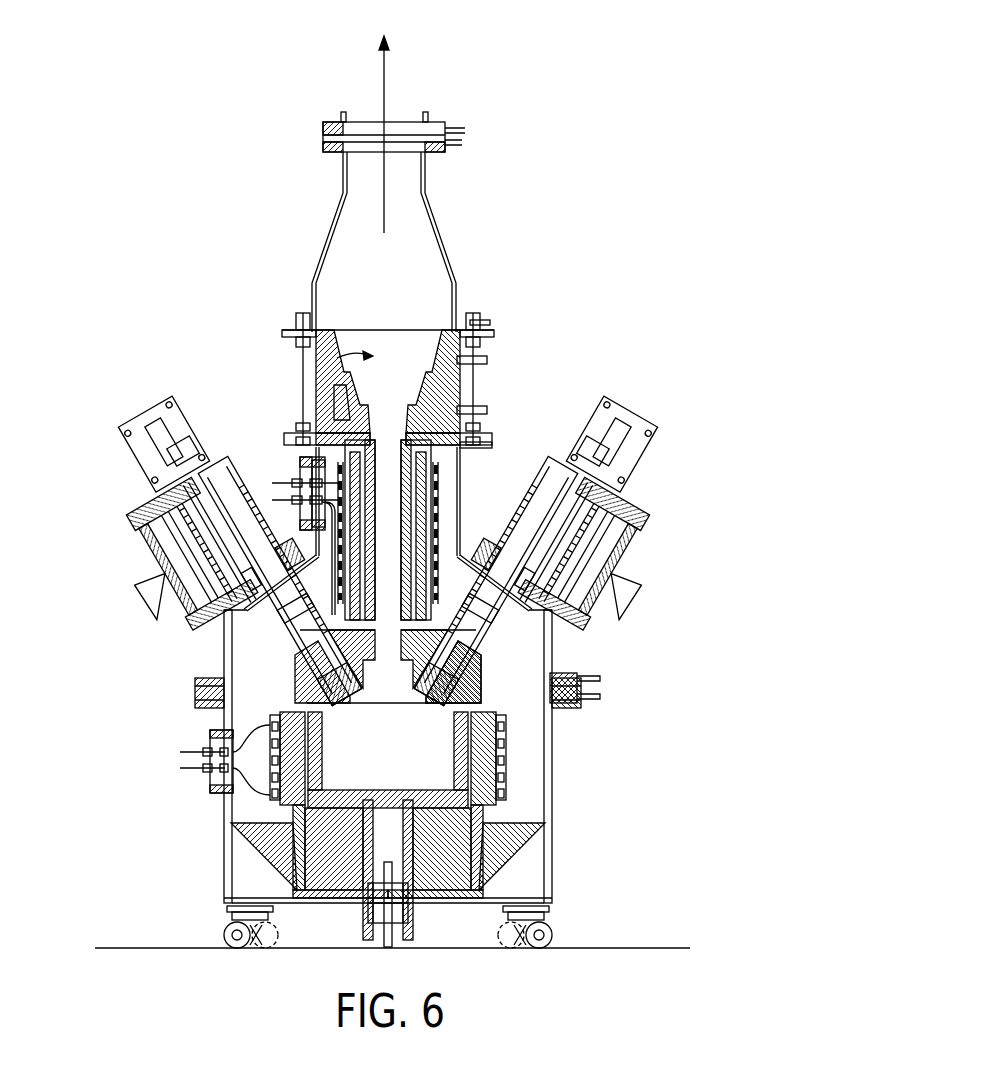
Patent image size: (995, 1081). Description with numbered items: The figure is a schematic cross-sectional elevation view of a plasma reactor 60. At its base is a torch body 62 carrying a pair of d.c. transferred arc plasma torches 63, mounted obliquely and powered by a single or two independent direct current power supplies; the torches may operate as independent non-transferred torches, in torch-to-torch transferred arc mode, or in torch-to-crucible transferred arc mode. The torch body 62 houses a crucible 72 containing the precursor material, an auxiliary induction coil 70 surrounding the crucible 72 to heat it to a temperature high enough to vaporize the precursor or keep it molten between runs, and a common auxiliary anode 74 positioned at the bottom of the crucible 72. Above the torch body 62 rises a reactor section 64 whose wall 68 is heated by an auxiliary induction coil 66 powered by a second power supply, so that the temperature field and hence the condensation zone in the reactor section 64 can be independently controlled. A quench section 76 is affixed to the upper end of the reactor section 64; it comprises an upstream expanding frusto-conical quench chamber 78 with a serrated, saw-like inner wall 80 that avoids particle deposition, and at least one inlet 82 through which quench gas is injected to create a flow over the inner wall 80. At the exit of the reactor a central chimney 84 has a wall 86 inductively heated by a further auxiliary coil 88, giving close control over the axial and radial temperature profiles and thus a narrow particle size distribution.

The plasma reactor 60 is at (624, 66).
The torch body 62 is at (485, 667).
The d.c. transferred arc plasma torches 63 is at (122, 472).
The reactor section 64 is at (463, 480).
The auxiliary induction coil 66 is at (295, 492).
The wall of the reactor section 68 is at (348, 583).
The auxiliary induction coil 70 is at (255, 750).
The crucible 72 is at (470, 776).
The auxiliary anode 74 is at (360, 890).
The quench section 76 is at (462, 380).
The quench chamber 78 is at (316, 367).
The serrated inner wall 80 is at (335, 390).
The inlet 82 is at (487, 410).
The central chimney 84 is at (395, 280).
The wall of the chimney 86 is at (342, 172).
The auxiliary coil 88 is at (323, 135).